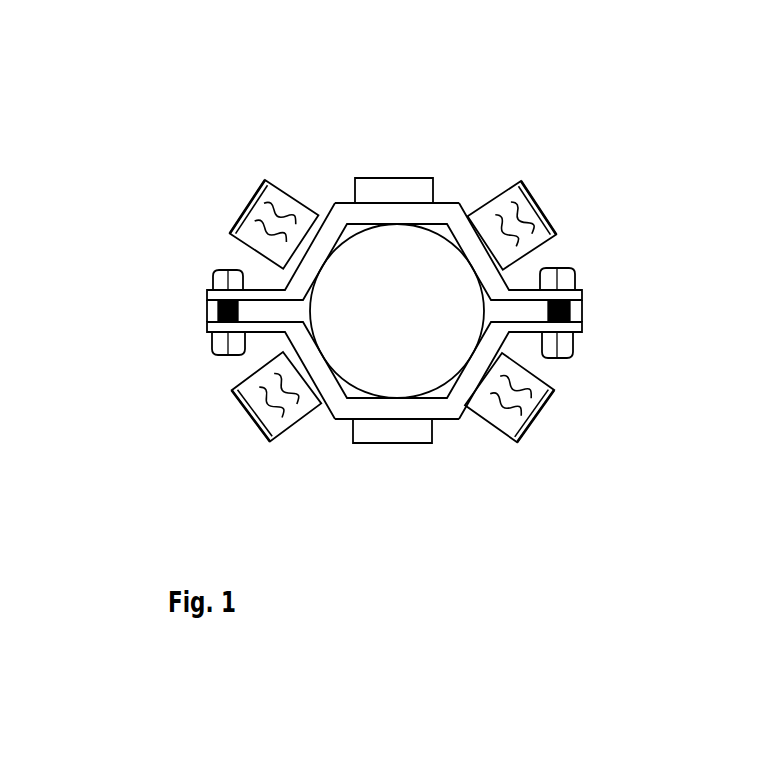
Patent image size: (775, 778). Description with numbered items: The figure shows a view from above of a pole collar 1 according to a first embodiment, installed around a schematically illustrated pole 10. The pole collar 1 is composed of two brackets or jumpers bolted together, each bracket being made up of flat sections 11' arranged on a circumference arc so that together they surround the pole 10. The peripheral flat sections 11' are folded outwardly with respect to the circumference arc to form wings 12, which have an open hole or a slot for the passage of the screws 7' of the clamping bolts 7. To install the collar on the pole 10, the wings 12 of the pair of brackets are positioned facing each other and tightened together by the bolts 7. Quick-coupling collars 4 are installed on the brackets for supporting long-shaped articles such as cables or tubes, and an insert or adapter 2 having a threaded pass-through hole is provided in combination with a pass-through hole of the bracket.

The pole collar 1 is at (580, 340).
The insert or adapter 2 is at (400, 178).
The quick-coupling collar 4 is at (548, 210).
The clamping bolt 7 is at (405, 341).
The screw 7' is at (341, 334).
The pole 10 is at (445, 232).
The flat section 11' is at (332, 279).
The wing 12 is at (258, 287).